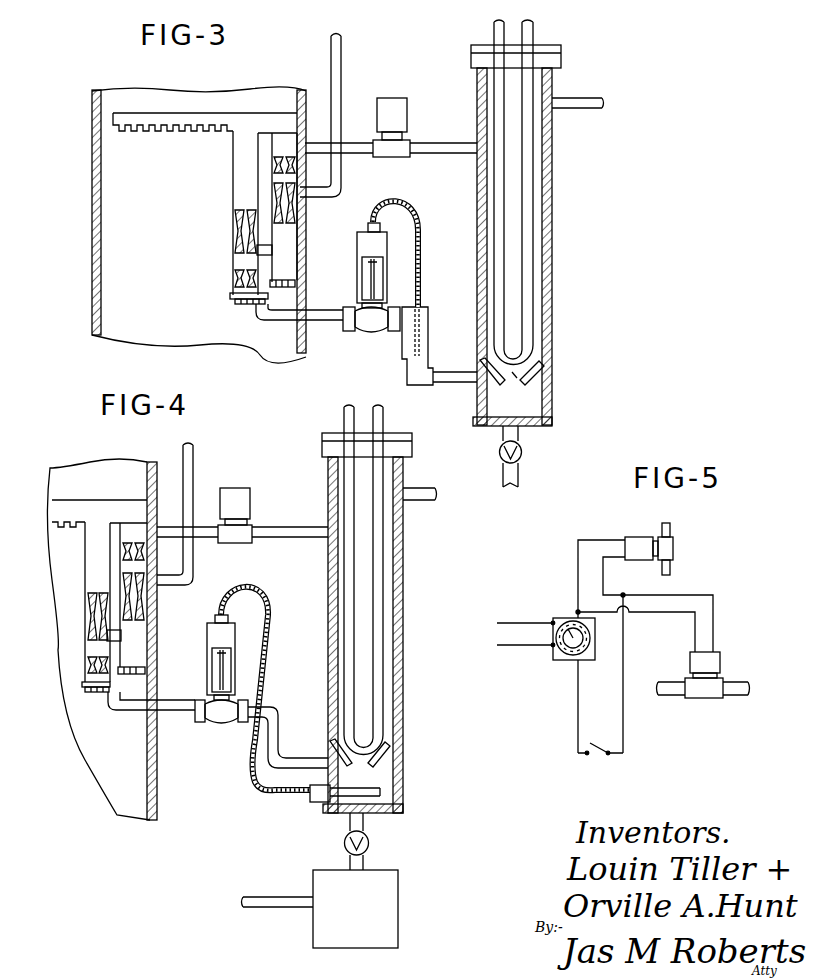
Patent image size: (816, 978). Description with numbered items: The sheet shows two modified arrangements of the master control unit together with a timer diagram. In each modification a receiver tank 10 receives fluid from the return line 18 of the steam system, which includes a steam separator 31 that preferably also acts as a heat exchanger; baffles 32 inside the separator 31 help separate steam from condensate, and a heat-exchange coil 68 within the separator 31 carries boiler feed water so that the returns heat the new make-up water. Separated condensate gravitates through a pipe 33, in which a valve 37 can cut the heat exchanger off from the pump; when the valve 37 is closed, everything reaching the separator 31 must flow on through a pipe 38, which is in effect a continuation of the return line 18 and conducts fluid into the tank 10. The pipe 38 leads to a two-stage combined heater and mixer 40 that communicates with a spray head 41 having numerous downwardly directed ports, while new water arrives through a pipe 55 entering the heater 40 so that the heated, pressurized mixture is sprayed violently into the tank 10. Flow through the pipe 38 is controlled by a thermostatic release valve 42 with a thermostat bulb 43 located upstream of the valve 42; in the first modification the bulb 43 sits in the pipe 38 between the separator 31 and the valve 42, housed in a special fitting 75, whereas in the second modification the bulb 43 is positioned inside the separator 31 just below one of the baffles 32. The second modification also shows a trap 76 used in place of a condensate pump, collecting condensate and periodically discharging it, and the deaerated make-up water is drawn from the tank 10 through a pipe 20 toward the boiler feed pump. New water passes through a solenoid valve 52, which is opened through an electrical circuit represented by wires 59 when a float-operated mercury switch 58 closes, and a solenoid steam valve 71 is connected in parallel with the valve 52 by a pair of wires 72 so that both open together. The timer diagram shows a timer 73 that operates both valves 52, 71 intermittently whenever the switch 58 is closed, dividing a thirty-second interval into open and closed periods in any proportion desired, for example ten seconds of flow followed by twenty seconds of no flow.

In FIG. 3, the tank 10 is at (92, 247).
In FIG. 4, the tank 10 is at (157, 806).
In FIG. 3, the return line 18 is at (596, 87).
In FIG. 4, the return line 18 is at (436, 470).
In FIG. 4, the pipe 20 is at (270, 897).
In FIG. 3, the steam separator 31 is at (552, 246).
In FIG. 4, the steam separator 31 is at (398, 673).
In FIG. 3, the baffles 32 is at (545, 373).
In FIG. 4, the baffles 32 is at (382, 766).
In FIG. 3, the pipe 33 is at (520, 433).
In FIG. 4, the pipe 33 is at (365, 824).
In FIG. 3, the valve 37 is at (522, 452).
In FIG. 4, the valve 37 is at (370, 843).
In FIG. 3, the pipe 38 is at (462, 383).
In FIG. 4, the pipe 38 is at (278, 726).
In FIG. 3, the two-stage combined heater and mixer 40 is at (233, 193).
In FIG. 4, the two-stage combined heater and mixer 40 is at (85, 553).
In FIG. 3, the spray head 41 is at (195, 113).
In FIG. 4, the spray head 41 is at (107, 482).
In FIG. 3, the thermostatic release valve 42 is at (368, 327).
In FIG. 4, the thermostatic release valve 42 is at (220, 717).
In FIG. 3, the thermostat bulb 43 is at (415, 352).
In FIG. 4, the thermostat bulb 43 is at (373, 790).
In FIG. 5, the solenoid valve 52 is at (673, 550).
In FIG. 3, the pipe 55 is at (341, 42).
In FIG. 4, the pipe 55 is at (197, 440).
In FIG. 5, the mercury switch 58 is at (590, 750).
In FIG. 5, the wires 59 is at (623, 710).
In FIG. 3, the heat-exchange coil 68 is at (528, 203).
In FIG. 4, the heat-exchange coil 68 is at (378, 593).
In FIG. 3, the solenoid steam valve 71 is at (398, 152).
In FIG. 4, the solenoid steam valve 71 is at (240, 540).
In FIG. 5, the solenoid steam valve 71 is at (720, 663).
In FIG. 3, the wires 72 is at (372, 60).
In FIG. 4, the wires 72 is at (213, 455).
In FIG. 5, the wires 72 is at (713, 640).
In FIG. 5, the timer 73 is at (553, 620).
In FIG. 3, the special fitting 75 is at (430, 341).
In FIG. 4, the trap 76 is at (398, 890).